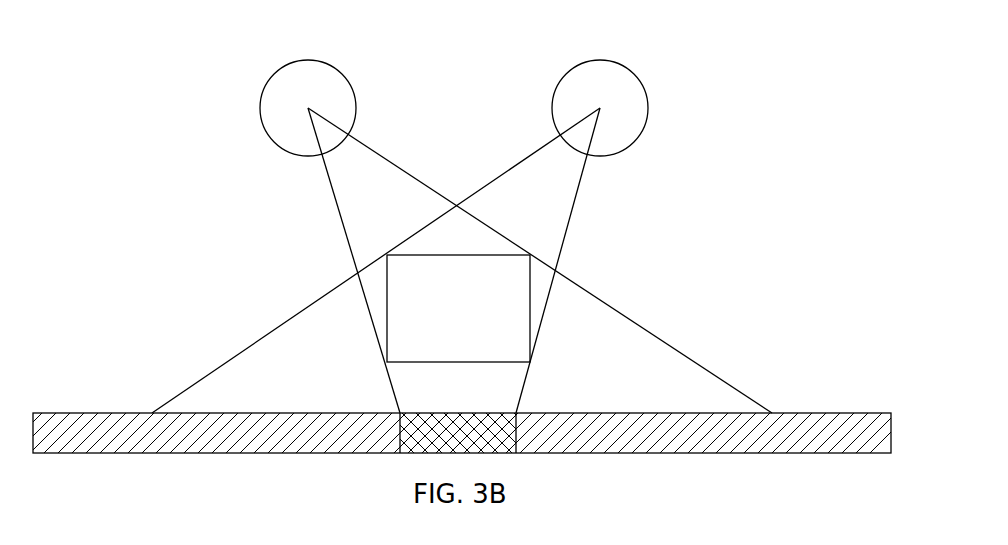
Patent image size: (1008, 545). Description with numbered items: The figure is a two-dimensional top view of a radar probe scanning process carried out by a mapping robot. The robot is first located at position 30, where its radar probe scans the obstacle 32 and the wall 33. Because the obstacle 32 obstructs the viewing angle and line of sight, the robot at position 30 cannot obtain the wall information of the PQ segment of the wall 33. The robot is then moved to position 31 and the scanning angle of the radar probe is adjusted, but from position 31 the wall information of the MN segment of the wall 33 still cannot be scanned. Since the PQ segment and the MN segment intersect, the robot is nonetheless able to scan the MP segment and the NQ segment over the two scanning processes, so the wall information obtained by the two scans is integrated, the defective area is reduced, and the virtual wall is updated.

The position 30 is at (343, 70).
The position 31 is at (635, 70).
The obstacle 32 is at (530, 308).
The wall 33 is at (854, 413).